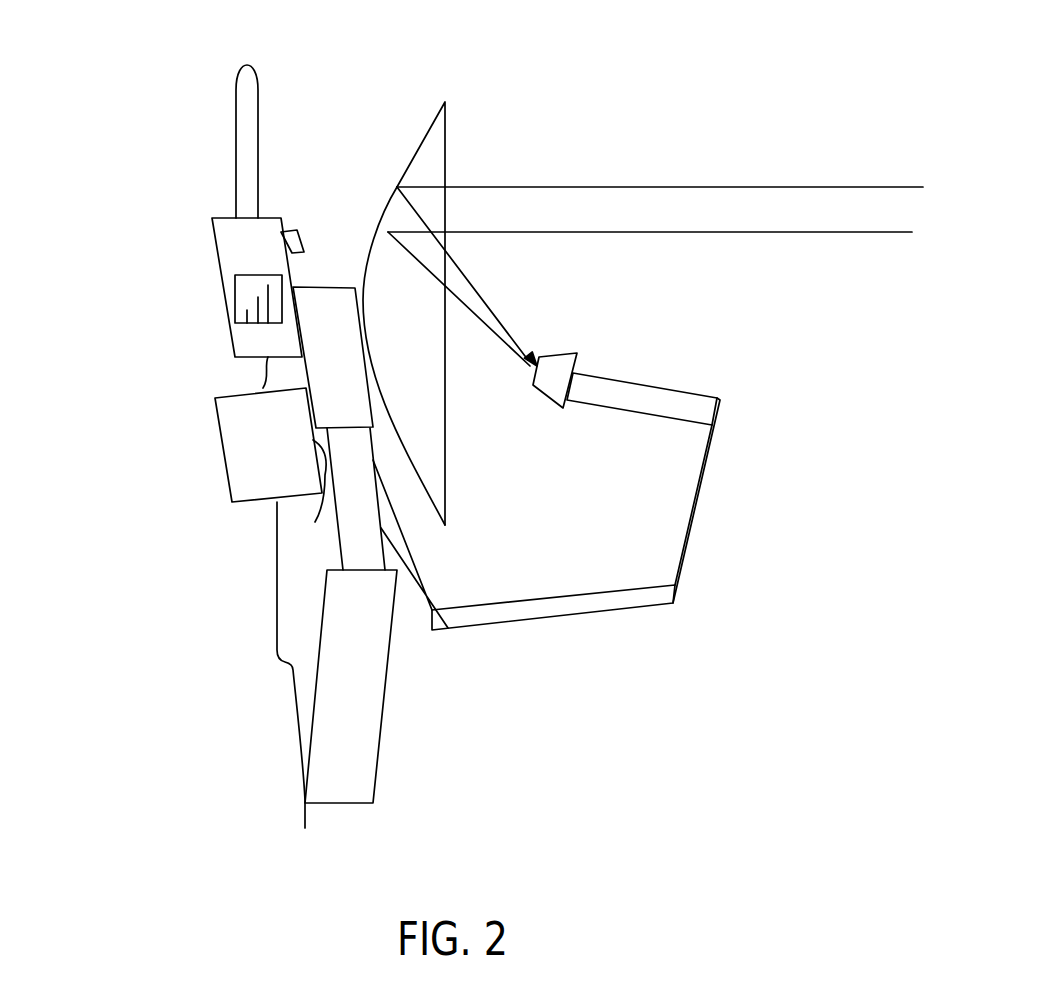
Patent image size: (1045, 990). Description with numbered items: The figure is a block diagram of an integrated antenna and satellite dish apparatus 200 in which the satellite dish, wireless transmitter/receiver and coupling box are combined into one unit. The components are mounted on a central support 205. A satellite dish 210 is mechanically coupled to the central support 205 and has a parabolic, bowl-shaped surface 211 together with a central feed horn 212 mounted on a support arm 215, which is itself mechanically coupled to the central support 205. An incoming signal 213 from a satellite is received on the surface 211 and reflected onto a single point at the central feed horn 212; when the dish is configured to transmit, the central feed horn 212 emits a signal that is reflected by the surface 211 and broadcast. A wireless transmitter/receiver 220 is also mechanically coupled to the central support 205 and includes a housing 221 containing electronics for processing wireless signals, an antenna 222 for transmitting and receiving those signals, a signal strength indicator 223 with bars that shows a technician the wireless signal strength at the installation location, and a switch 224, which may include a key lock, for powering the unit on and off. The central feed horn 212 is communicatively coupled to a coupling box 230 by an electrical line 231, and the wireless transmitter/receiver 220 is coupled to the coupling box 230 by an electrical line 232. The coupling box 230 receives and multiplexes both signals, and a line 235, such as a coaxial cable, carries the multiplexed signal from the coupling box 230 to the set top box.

The integrated antenna and satellite dish apparatus 200 is at (105, 92).
The central support 205 is at (377, 710).
The satellite dish 210 is at (400, 125).
The parabolic surface 211 is at (370, 245).
The central feed horn 212 is at (563, 357).
The signal 213 is at (665, 163).
The support arm 215 is at (622, 405).
The wireless transmitter/receiver 220 is at (190, 275).
The housing 221 is at (232, 253).
The antenna 222 is at (245, 137).
The signal strength indicator 223 is at (245, 298).
The switch 224 is at (293, 233).
The coupling box 230 is at (222, 467).
The electrical line 231 is at (334, 500).
The electrical line 232 is at (258, 380).
The line 235 is at (275, 652).